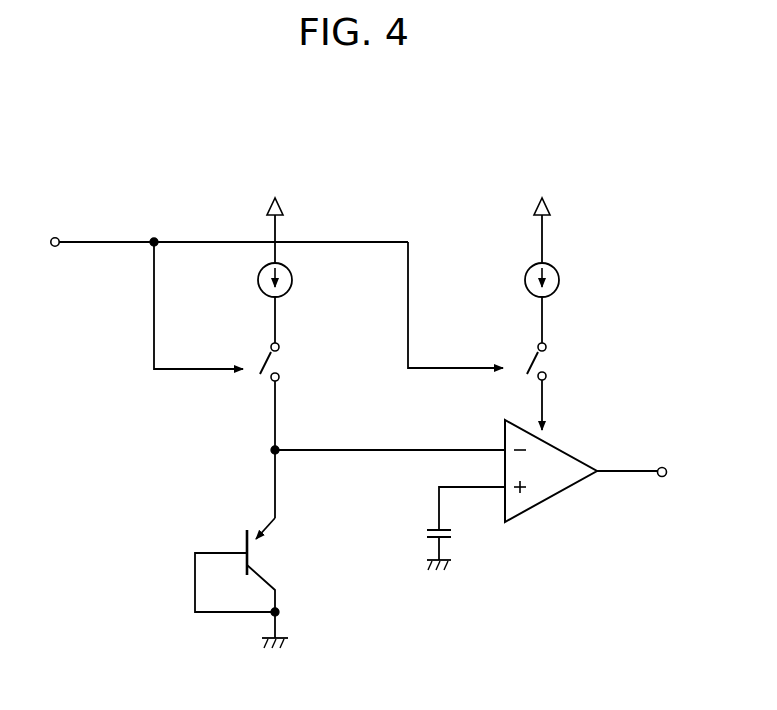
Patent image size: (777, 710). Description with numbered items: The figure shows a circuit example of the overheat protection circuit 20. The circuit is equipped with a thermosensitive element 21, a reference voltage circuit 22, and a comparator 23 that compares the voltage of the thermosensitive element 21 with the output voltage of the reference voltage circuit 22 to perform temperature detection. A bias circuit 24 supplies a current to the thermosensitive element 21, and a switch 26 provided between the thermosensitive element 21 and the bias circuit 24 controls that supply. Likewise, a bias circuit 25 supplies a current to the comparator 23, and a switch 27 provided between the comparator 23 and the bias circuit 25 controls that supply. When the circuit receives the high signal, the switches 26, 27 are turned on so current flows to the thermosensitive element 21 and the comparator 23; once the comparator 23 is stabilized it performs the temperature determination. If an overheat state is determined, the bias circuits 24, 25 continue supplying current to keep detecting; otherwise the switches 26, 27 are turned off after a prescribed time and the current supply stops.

The overheat protection circuit 20 is at (391, 138).
The thermosensitive element 21 is at (283, 568).
The reference voltage circuit 22 is at (455, 538).
The comparator 23 is at (548, 502).
The bias circuit 24 is at (292, 286).
The bias circuit 25 is at (559, 286).
The switch 26 is at (293, 362).
The switch 27 is at (555, 362).